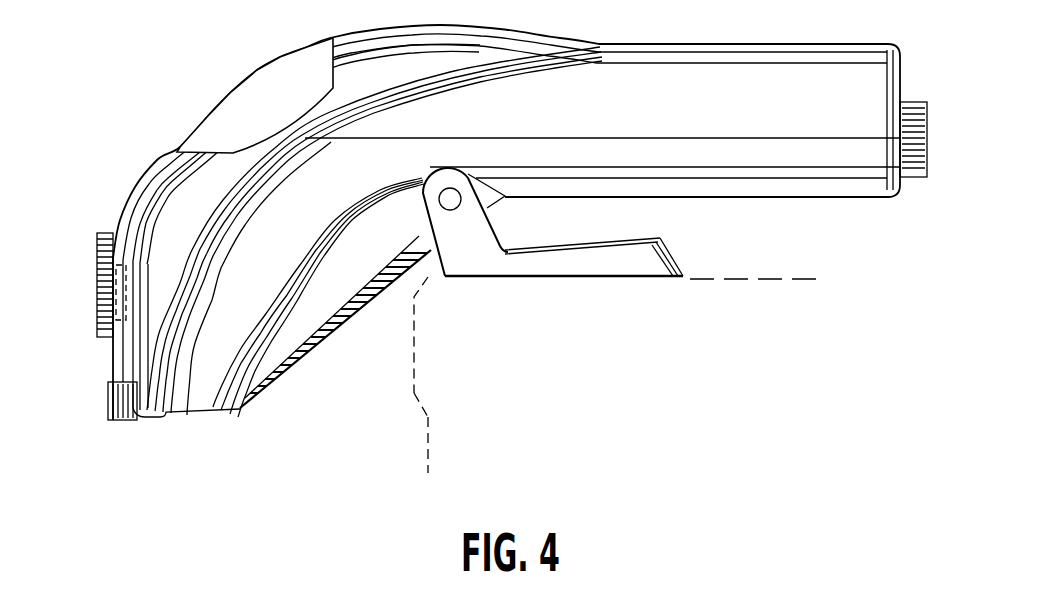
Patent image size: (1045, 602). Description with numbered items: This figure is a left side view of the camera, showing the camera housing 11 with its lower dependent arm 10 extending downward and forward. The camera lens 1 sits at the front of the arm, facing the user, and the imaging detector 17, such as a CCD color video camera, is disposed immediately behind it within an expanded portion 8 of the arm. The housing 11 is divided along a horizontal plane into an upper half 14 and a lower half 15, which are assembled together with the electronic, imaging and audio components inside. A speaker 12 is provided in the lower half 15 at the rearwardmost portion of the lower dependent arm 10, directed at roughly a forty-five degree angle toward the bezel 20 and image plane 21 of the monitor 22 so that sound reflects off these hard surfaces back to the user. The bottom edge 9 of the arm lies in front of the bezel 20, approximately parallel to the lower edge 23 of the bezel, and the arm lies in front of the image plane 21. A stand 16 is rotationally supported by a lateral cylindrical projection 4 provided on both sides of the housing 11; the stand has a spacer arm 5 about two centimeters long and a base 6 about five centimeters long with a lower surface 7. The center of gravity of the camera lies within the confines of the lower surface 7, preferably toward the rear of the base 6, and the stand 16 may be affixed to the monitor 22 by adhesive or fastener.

The camera lens 1 is at (100, 297).
The lateral cylindrical projection 4 is at (449, 190).
The spacer arm 5 is at (451, 267).
The base 6 is at (566, 278).
The lower surface 7 is at (652, 280).
The expanded portion 8 is at (110, 368).
The bottom edge 9 is at (124, 422).
The lower dependent arm 10 is at (226, 359).
The camera housing 11 is at (662, 120).
The speaker 12 is at (312, 368).
The upper half 14 is at (412, 129).
The lower half 15 is at (352, 177).
The stand 16 is at (582, 258).
The imaging detector 17 is at (100, 330).
The bezel 20 is at (411, 375).
The image plane 21 is at (426, 462).
The monitor 22 is at (775, 280).
The lower edge 23 is at (423, 415).